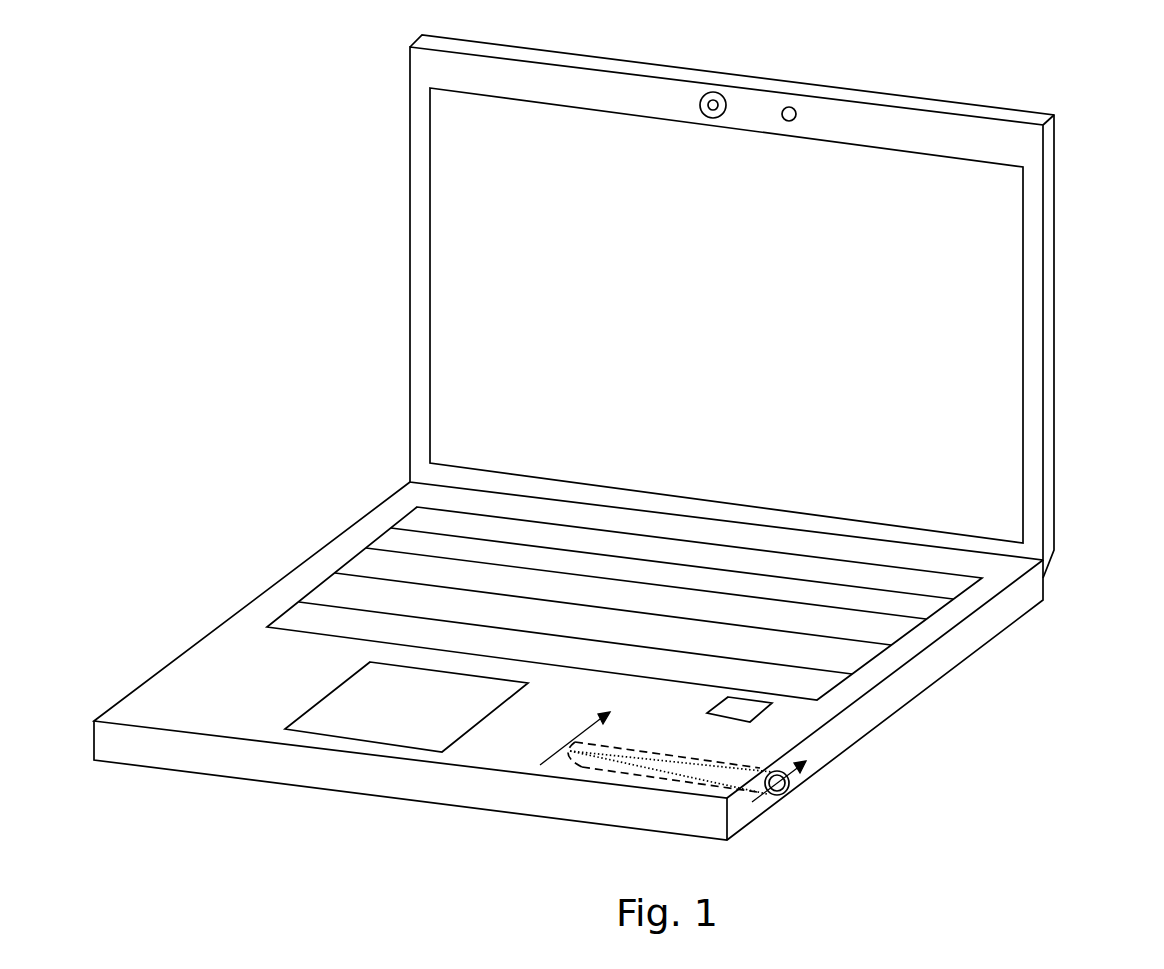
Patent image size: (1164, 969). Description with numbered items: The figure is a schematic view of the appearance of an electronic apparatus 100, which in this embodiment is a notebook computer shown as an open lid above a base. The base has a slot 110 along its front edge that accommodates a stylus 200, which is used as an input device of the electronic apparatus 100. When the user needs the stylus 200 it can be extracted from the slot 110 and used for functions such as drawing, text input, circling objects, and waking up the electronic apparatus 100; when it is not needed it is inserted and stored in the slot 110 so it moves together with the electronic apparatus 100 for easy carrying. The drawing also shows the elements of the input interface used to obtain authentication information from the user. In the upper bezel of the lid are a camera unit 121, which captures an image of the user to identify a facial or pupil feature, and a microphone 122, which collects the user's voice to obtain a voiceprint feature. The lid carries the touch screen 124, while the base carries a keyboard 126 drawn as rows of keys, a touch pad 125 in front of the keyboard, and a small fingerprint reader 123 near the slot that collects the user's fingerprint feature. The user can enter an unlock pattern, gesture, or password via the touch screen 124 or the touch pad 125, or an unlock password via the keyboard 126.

The electronic apparatus 100 is at (1054, 283).
The slot 110 is at (640, 750).
The camera unit 121 is at (720, 92).
The microphone 122 is at (792, 107).
The fingerprint reader 123 is at (768, 707).
The touch screen 124 is at (1025, 410).
The touch pad 125 is at (373, 743).
The keyboard 126 is at (903, 638).
The stylus 200 is at (787, 790).